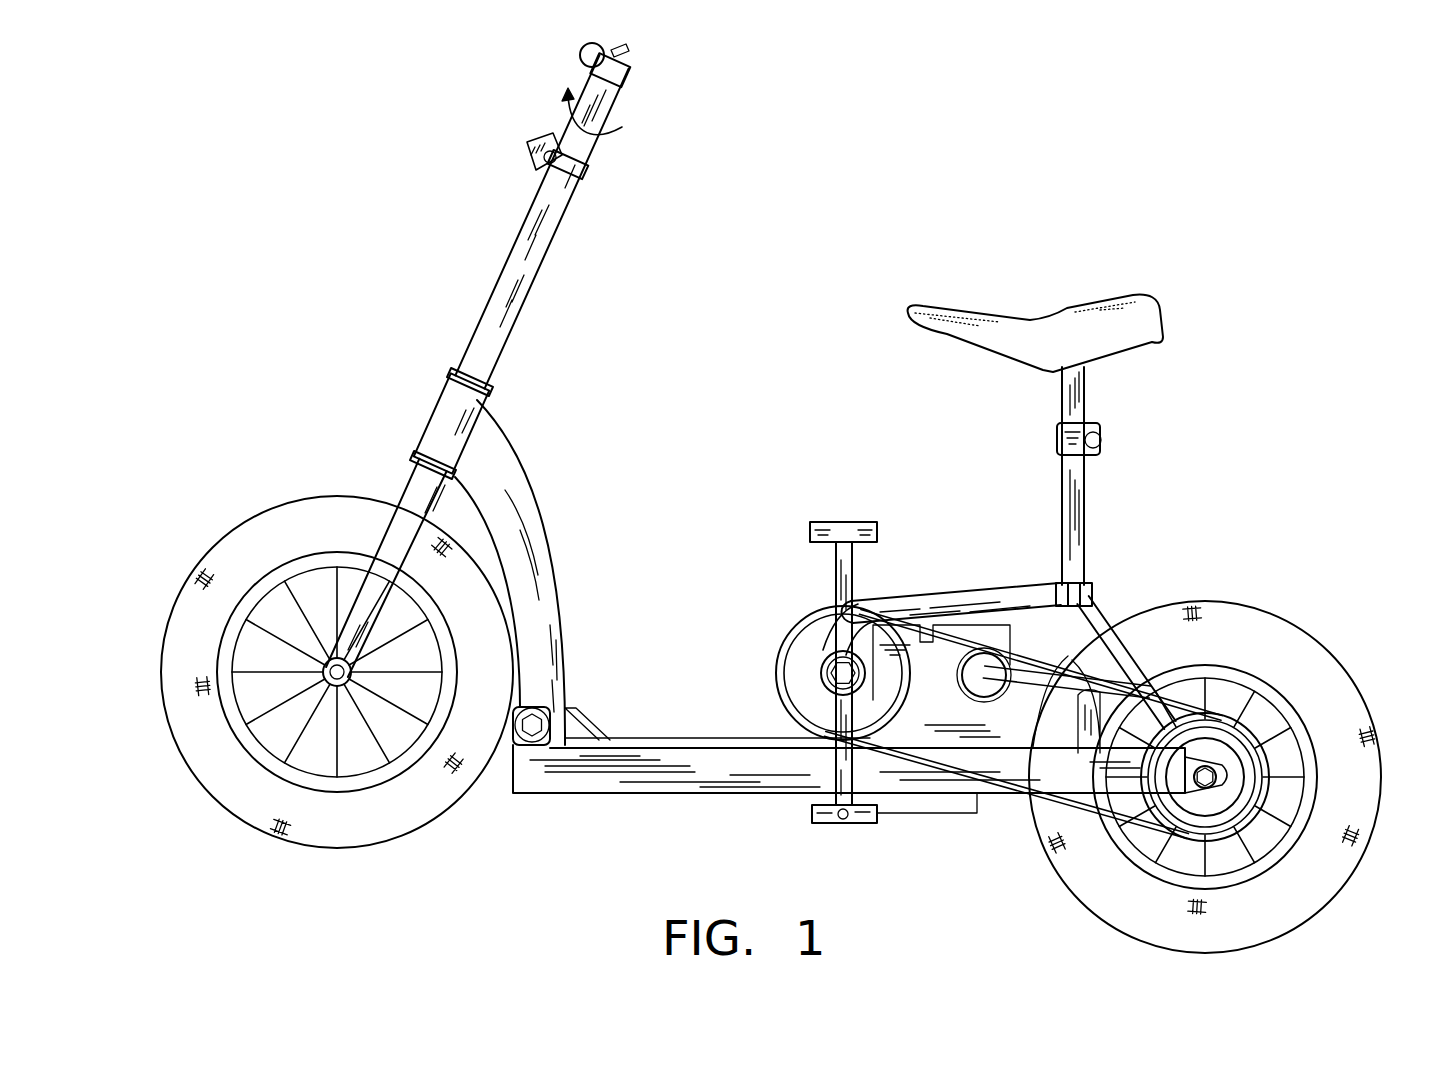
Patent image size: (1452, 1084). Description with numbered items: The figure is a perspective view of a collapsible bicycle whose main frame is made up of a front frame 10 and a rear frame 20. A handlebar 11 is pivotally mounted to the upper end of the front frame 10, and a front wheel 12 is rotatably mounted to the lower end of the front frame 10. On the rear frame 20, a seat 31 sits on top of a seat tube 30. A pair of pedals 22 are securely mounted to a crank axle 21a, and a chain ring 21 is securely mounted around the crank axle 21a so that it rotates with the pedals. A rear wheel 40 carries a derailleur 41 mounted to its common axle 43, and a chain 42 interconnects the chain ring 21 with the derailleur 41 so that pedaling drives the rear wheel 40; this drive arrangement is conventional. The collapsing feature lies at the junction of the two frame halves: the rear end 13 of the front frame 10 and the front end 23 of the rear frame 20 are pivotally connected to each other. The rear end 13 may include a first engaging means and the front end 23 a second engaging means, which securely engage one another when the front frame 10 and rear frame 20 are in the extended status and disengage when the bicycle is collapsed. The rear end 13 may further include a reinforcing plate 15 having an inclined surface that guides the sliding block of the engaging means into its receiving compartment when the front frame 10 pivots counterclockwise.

The front frame 10 is at (545, 497).
The handlebar 11 is at (625, 78).
The front wheel 12 is at (252, 532).
The rear end of the front frame 13 is at (553, 690).
The reinforcing plate 15 is at (585, 720).
The rear frame 20 is at (943, 578).
The chain ring 21 is at (793, 650).
The crank axle 21a is at (838, 678).
The pedals 22 is at (820, 522).
The front end of the rear frame 23 is at (532, 778).
The seat tube 30 is at (1083, 487).
The seat 31 is at (1140, 295).
The rear wheel 40 is at (1296, 643).
The derailleur 41 is at (1227, 717).
The chain 42 is at (1032, 787).
The common axle 43 is at (1217, 767).